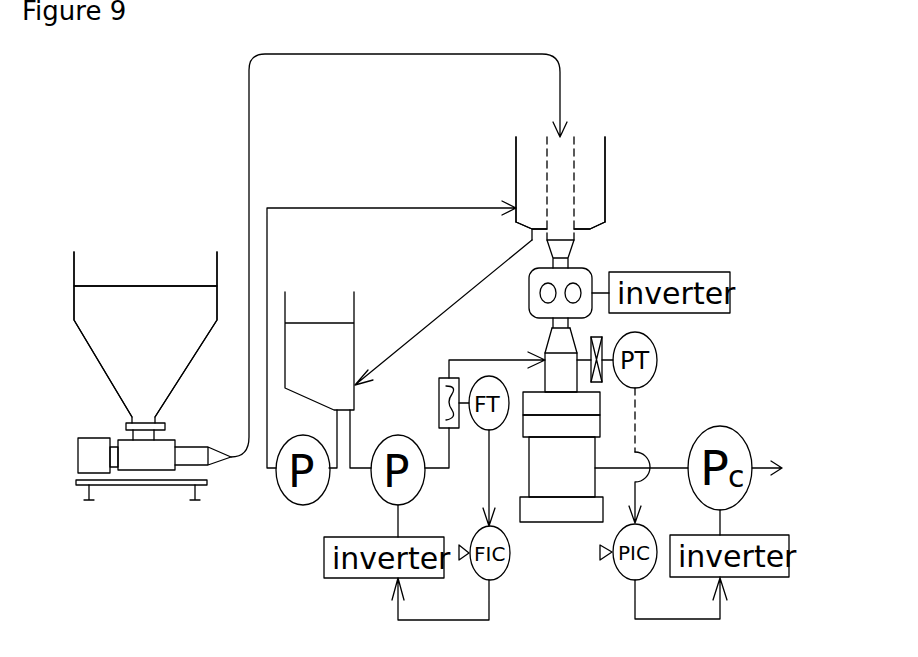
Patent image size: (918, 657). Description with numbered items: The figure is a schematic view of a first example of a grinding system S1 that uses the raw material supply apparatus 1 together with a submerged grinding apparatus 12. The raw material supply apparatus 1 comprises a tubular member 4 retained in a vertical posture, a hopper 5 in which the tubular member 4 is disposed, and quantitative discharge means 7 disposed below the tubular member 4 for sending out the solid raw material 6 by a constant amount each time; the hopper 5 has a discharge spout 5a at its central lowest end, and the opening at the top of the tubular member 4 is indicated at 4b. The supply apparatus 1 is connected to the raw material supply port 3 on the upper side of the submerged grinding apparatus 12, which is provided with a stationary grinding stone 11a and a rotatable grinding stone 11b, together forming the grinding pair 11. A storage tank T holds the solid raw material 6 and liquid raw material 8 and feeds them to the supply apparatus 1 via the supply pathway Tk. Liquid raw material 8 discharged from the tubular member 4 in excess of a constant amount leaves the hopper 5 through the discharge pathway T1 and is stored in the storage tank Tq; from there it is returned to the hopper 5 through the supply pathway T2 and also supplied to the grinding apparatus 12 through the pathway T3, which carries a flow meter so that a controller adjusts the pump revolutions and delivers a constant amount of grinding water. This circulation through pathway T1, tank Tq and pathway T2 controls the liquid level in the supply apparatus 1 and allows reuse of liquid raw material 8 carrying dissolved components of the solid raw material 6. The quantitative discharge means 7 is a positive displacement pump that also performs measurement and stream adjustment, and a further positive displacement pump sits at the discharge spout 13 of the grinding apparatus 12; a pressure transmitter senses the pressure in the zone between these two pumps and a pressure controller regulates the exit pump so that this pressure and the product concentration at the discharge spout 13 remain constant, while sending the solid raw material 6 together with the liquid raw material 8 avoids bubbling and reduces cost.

The raw material supply apparatus 1 is at (502, 174).
The raw material supply port 3 is at (543, 378).
The tubular member 4 is at (574, 185).
The feed port 4b is at (565, 148).
The hopper 5 is at (605, 165).
The discharge spout 5a is at (575, 247).
The solid raw material 6 is at (164, 296).
The quantitative discharge means 7 is at (529, 298).
The liquid raw material 8 is at (120, 305).
The mixing unit 11 is at (740, 367).
The stationary grinding stone 11a is at (600, 400).
The rotatable grinding stone 11b is at (600, 425).
The submerged grinding apparatus 12 is at (548, 478).
The discharge spout 13 is at (672, 468).
The storage tank T is at (74, 267).
The supply pathway Tk is at (313, 54).
The discharge pathway T1 is at (455, 303).
The supply pathway T2 is at (415, 207).
The supply pathway T3 is at (435, 455).
The storage tank Tq is at (357, 310).
The grinding system S1 is at (430, 31).